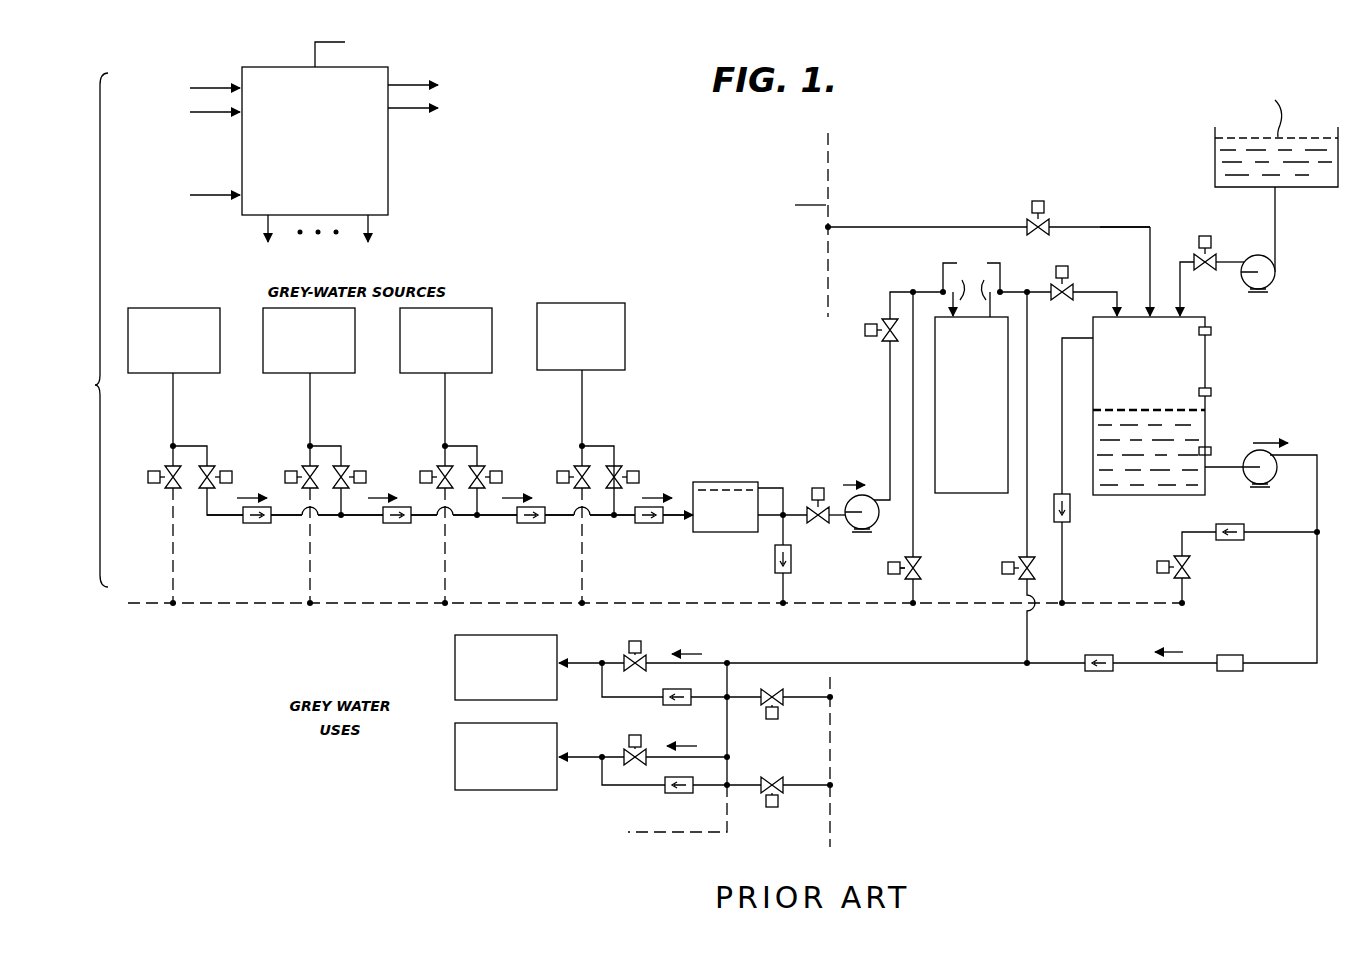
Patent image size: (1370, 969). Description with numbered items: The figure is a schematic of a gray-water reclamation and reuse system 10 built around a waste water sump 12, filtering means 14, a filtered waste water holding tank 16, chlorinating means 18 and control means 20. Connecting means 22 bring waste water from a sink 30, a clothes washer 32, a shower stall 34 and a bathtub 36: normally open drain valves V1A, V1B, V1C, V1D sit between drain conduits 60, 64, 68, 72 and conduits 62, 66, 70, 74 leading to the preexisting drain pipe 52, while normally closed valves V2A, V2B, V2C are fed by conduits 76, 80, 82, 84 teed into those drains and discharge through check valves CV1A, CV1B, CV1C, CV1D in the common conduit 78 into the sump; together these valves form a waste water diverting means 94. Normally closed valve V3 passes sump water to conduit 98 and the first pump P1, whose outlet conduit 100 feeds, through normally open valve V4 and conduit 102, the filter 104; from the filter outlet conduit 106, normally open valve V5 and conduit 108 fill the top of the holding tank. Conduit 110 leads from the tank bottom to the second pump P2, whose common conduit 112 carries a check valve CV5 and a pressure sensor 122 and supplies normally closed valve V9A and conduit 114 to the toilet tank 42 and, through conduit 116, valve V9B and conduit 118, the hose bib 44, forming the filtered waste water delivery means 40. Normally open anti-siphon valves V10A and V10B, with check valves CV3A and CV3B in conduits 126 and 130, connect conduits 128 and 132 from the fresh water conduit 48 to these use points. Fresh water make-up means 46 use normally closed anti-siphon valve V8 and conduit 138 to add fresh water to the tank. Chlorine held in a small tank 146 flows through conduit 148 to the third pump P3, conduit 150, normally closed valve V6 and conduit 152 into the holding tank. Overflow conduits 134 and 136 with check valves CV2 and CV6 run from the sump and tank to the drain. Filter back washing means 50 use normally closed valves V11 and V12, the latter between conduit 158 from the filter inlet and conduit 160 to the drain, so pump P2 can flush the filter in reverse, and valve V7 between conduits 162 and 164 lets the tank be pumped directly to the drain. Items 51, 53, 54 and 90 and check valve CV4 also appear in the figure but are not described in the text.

The gray-water reclamation and reuse system 10 is at (91, 330).
The waste water sump 12 is at (736, 482).
The waste water filtering means 14 is at (952, 256).
The filtered waste water holding tank 16 is at (1196, 315).
The waste water chlorinating means 18 is at (1207, 162).
The control means 20 is at (390, 172).
The connecting means 22 is at (637, 402).
The sink 30 is at (176, 306).
The clothes washer 32 is at (292, 374).
The shower stall 34 is at (428, 374).
The bathtub 36 is at (573, 302).
The filtered waste water delivery means 40 is at (832, 819).
The toilet tank 42 is at (455, 650).
The hose bib 44 is at (505, 790).
The fresh water make-up means 46 is at (1105, 218).
The fresh water pressure conduit 48 is at (830, 175).
The filter back washing means 50 is at (892, 572).
The sump inlet 51 is at (683, 490).
The drain pipe 52 is at (623, 603).
The level sensor 53 is at (1212, 392).
The high level sensor 54 is at (1213, 332).
The sink drain conduit 60 is at (173, 407).
The sink drain conduit to drain pipe 62 is at (173, 553).
The clothes washer drain conduit 64 is at (310, 407).
The clothes washer conduit to drain pipe 66 is at (310, 577).
The shower stall drain conduit 68 is at (445, 407).
The shower stall conduit to drain pipe 70 is at (445, 572).
The bathtub drain conduit 72 is at (582, 393).
The bathtub conduit to drain pipe 74 is at (582, 566).
The sink branch conduit 76 is at (190, 449).
The common conduit 78 is at (628, 520).
The washer branch conduit 80 is at (325, 449).
The shower branch conduit 82 is at (460, 449).
The bathtub branch conduit 84 is at (595, 449).
The sump outlet line 90 is at (788, 518).
The waste water diverting means 94 is at (222, 530).
The pump inlet conduit 98 is at (845, 525).
The pump outlet conduit 100 is at (890, 428).
The filter inlet conduit 102 is at (929, 290).
The filter 104 is at (960, 494).
The filter outlet conduit 106 is at (1013, 290).
The holding tank inlet conduit 108 is at (1100, 268).
The holding tank outlet conduit 110 is at (1222, 470).
The common delivery conduit 112 is at (1317, 602).
The toilet tank conduit 114 is at (580, 662).
The hose bib branch conduit 116 is at (716, 759).
The hose bib conduit 118 is at (583, 757).
The pressure sensor 122 is at (1232, 671).
The toilet fresh water branch conduit 126 is at (607, 698).
The fresh water conduit to V10A 128 is at (820, 694).
The hose bib fresh water branch conduit 130 is at (625, 786).
The fresh water conduit to V10B 132 is at (813, 784).
The sump overflow conduit 134 is at (786, 597).
The holding tank overflow conduit 136 is at (898, 226).
The fresh water make-up conduit 138 is at (1152, 228).
The chlorine tank 146 is at (1215, 140).
The chlorine tank outlet conduit 148 is at (1276, 243).
The chlorine pump outlet conduit 150 is at (1228, 261).
The chlorine feed conduit 152 is at (1190, 257).
The backwash drain branch conduit 158 is at (915, 532).
The backwash drain conduit 160 is at (915, 588).
The tank drain branch conduit 162 is at (1268, 532).
The tank drain conduit 164 is at (1183, 587).
The sink drain valve V1A is at (156, 450).
The clothes washer drain valve V1B is at (293, 462).
The shower stall drain valve V1C is at (429, 462).
The bathtub drain valve V1D is at (565, 460).
The sink diverting valve V2A is at (226, 460).
The washer diverting valve V2B is at (360, 460).
The shower diverting valve V2C is at (495, 460).
The sump outlet valve V3 is at (832, 474).
The filter inlet valve V4 is at (884, 314).
The filter outlet valve V5 is at (1078, 271).
The chlorine feed valve V6 is at (1209, 236).
The tank drain valve V7 is at (1197, 567).
The fresh water make-up valve V8 is at (1045, 199).
The toilet tank supply valve V9A is at (645, 647).
The hose bib supply valve V9B is at (633, 735).
The toilet anti-siphon valve V10A is at (771, 721).
The hose bib anti-siphon valve V10B is at (771, 808).
The backwash supply valve V11 is at (1014, 560).
The backwash drain valve V12 is at (894, 560).
The sink check valve CV1A is at (256, 524).
The washer check valve CV1B is at (408, 524).
The shower check valve CV1C is at (540, 524).
The bathtub check valve CV1D is at (644, 524).
The sump overflow check valve CV2 is at (774, 570).
The toilet branch check valve CV3A is at (683, 705).
The hose bib branch check valve CV3B is at (682, 794).
The check valve CV4 is at (1232, 541).
The delivery check valve CV5 is at (1100, 671).
The holding tank overflow check valve CV6 is at (1073, 516).
The first water pump P1 is at (878, 486).
The second pump P2 is at (1278, 475).
The third pump P3 is at (1270, 282).